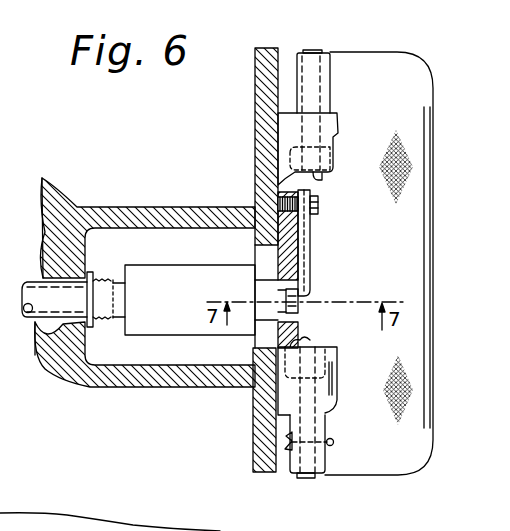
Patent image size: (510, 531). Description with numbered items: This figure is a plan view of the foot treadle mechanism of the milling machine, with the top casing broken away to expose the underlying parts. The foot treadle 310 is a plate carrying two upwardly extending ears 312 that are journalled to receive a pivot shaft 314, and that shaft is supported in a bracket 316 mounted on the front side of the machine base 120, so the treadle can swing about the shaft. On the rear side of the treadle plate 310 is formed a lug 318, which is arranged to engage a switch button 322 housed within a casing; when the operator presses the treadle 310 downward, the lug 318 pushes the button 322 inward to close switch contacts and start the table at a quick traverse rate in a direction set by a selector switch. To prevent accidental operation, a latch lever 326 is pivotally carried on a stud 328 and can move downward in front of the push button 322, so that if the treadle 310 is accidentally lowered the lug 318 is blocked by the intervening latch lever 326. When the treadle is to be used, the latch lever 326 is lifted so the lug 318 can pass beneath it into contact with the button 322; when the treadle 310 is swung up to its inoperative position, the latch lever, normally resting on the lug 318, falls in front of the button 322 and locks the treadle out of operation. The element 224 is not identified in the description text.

The base 120 is at (135, 217).
The motor 224 is at (168, 254).
The foot treadle 310 is at (393, 87).
The ears 312 is at (327, 80).
The pivot shaft 314 is at (300, 178).
The bracket 316 is at (292, 130).
The lug 318 is at (300, 306).
The switch button 322 is at (270, 280).
The latch lever 326 is at (310, 252).
The stud 328 is at (318, 201).